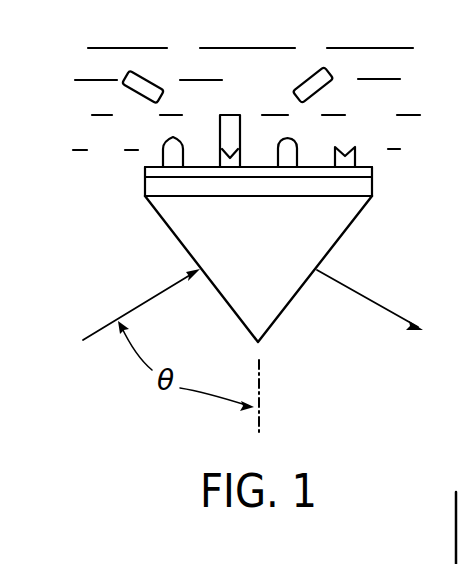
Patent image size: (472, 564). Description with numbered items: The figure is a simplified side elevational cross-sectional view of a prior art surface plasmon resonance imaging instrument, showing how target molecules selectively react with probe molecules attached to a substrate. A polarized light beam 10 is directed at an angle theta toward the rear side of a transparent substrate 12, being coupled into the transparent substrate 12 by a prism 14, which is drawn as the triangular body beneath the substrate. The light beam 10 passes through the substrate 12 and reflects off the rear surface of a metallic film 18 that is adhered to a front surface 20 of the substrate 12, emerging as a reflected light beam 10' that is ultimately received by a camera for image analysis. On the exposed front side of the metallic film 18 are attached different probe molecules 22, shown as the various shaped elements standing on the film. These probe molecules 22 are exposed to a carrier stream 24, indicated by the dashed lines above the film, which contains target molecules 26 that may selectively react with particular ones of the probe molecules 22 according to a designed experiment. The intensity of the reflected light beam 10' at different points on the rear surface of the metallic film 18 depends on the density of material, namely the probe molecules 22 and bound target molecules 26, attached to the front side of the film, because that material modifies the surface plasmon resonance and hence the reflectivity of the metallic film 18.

The polarized light beam 10 is at (141, 294).
The reflected light beam 10' is at (374, 298).
The transparent substrate 12 is at (157, 189).
The prism 14 is at (332, 221).
The metallic film 18 is at (375, 168).
The front surface 20 is at (375, 172).
The probe molecules 22 is at (222, 157).
The carrier stream 24 is at (283, 87).
The target molecules 26 is at (220, 122).